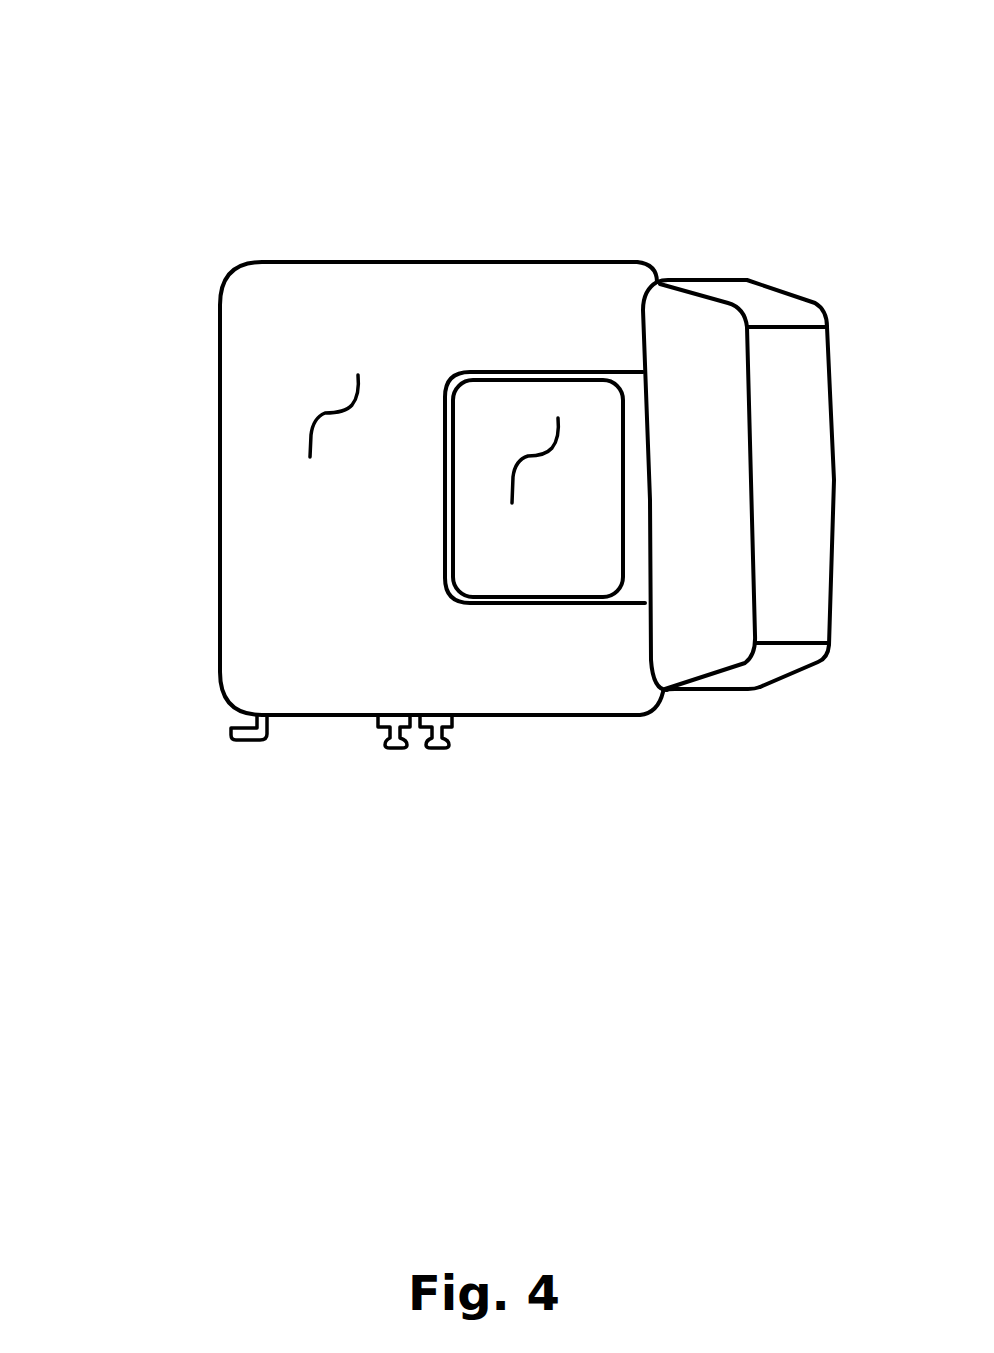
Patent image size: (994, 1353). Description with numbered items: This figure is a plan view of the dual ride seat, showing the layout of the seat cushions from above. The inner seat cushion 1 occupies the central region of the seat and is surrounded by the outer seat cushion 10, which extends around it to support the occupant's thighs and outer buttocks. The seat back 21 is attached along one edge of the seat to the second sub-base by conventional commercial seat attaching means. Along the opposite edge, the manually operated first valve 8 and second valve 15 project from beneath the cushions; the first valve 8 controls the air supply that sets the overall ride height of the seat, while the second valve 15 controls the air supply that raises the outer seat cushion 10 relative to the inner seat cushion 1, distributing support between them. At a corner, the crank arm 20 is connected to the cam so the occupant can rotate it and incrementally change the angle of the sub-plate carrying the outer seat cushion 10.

The outer seat cushion 10 is at (322, 405).
The inner seat cushion 1 is at (521, 442).
The seat back 21 is at (781, 693).
The crank arm 20 is at (224, 742).
The second valve 15 is at (397, 757).
The first valve 8 is at (442, 757).